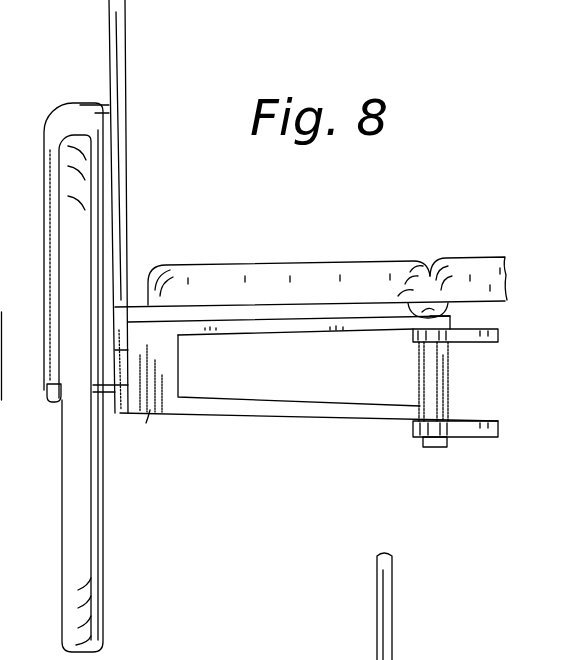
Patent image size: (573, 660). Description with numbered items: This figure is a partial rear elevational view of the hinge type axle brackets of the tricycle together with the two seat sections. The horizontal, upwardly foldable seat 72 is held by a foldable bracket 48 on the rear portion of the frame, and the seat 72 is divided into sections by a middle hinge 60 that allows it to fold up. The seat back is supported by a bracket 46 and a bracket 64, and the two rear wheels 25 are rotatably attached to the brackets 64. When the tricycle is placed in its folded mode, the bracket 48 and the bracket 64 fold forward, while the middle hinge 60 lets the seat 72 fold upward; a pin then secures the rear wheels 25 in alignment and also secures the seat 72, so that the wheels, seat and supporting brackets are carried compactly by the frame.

The rear wheels 25 is at (100, 566).
The bracket 46 is at (126, 22).
The foldable bracket 48 is at (427, 448).
The middle hinge 60 is at (430, 258).
The bracket 64 is at (148, 422).
The seat 72 is at (258, 268).